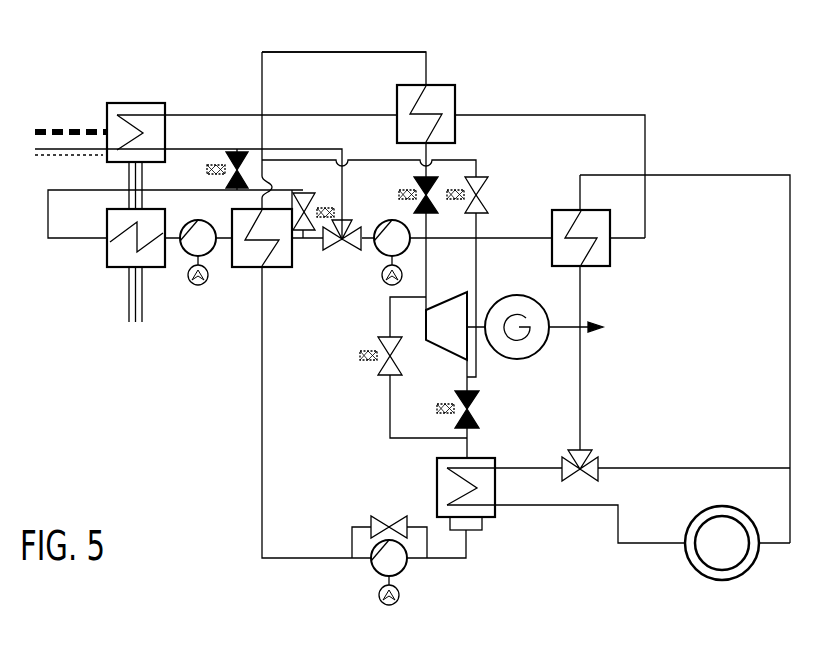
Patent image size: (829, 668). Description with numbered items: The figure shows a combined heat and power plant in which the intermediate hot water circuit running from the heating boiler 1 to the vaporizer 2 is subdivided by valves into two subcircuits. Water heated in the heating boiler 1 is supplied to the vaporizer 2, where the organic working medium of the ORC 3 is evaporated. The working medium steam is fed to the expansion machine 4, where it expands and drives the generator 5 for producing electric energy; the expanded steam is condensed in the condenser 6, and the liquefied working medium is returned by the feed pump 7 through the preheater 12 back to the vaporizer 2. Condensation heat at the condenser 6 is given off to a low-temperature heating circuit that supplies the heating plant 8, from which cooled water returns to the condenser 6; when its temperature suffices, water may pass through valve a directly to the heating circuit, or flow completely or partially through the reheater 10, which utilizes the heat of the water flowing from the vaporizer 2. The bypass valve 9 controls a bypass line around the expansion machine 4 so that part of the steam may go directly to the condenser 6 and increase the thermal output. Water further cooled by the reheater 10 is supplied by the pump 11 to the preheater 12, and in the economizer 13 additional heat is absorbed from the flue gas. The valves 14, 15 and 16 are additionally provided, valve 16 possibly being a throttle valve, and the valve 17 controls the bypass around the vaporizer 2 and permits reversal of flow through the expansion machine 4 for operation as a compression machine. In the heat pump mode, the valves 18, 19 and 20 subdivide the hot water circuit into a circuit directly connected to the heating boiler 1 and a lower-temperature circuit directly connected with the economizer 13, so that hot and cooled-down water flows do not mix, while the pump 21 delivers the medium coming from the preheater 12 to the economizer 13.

The heating boiler 1 is at (155, 103).
The vaporizer 2 is at (452, 85).
The ORC 3 is at (318, 52).
The expansion machine 4 is at (445, 295).
The generator 5 is at (540, 358).
The condenser 6 is at (487, 518).
The feed pump 7 is at (373, 570).
The heating plant 8 is at (742, 570).
The bypass valve 9 is at (402, 360).
The reheater 10 is at (610, 258).
The pump 11 is at (388, 221).
The preheater 12 is at (282, 267).
The economizer 13 is at (112, 267).
The valve 14 is at (418, 180).
The valve 15 is at (478, 414).
The valve 16 is at (387, 514).
The valve 17 is at (484, 185).
The valve 18 is at (340, 250).
The valve 19 is at (237, 152).
The valve 20 is at (306, 193).
The pump 21 is at (200, 286).
The valve a is at (592, 455).